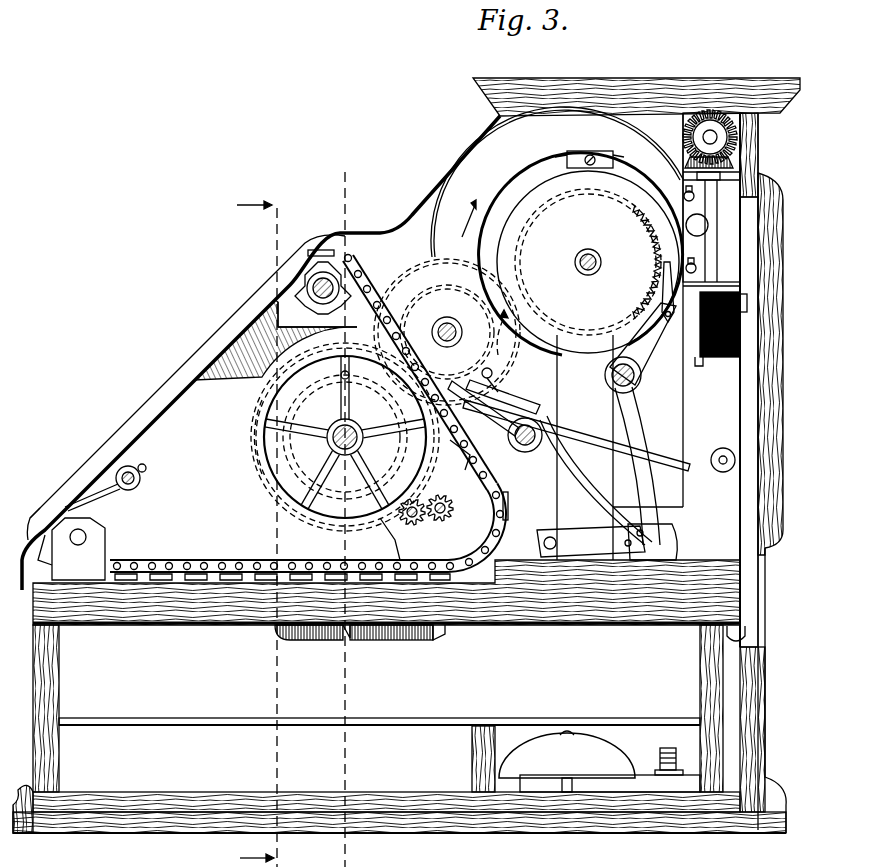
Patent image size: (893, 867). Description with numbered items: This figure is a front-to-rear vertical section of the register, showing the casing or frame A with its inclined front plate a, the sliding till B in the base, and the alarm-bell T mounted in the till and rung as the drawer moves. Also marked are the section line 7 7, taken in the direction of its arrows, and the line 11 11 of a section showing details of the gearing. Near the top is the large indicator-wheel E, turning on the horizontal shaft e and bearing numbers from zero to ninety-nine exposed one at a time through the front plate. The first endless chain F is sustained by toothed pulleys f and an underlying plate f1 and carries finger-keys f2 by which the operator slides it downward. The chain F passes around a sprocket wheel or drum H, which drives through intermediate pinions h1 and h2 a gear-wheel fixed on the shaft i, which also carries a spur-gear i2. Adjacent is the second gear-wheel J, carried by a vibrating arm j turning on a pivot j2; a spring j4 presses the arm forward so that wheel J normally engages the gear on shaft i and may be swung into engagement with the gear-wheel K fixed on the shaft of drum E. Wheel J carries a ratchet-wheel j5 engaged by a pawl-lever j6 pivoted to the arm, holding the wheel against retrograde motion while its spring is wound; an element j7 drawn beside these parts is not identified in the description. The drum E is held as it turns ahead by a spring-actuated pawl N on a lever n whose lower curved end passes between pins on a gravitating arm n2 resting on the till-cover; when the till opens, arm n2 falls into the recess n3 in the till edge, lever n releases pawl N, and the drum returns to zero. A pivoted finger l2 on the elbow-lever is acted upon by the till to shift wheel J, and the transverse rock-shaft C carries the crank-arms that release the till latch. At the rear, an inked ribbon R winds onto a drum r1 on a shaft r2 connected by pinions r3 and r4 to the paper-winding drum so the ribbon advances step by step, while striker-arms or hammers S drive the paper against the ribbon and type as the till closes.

The section line 7 7 is at (259, 525).
The section line 11 11 is at (346, 508).
The external casing or frame A is at (748, 641).
The till or tray B is at (399, 729).
The alarm-bell T is at (603, 750).
The gear-wheel K is at (588, 262).
The horizontal shaft e is at (578, 262).
The indicator-wheel E is at (557, 231).
The spring-actuated pawl N is at (662, 292).
The lever n is at (638, 372).
The gravitating arm n2 is at (660, 532).
The second drum r1 is at (710, 414).
The inked ribbon R is at (742, 336).
The striker-arms or hammers S is at (745, 381).
The shaft r2 is at (708, 243).
The pinion r4 is at (735, 135).
The pinion r3 is at (732, 162).
The ratchet-wheel j5 is at (447, 332).
The second gear-wheel J is at (472, 325).
The vibrating arm j is at (462, 418).
The pivot j2 is at (530, 448).
The pawl-lever j6 is at (572, 426).
The spring j4 is at (566, 455).
The link bar j7 is at (608, 465).
The shaft i is at (345, 437).
The spur-gear i2 is at (262, 440).
The underlying plate f1 is at (185, 388).
The inclined front wall or plate a is at (261, 353).
The toothed pulley f is at (330, 290).
The endless chain F is at (308, 418).
The finger-keys or projections f2 is at (506, 512).
The intermediate pinion h1 is at (448, 502).
The intermediate pinion h2 is at (410, 522).
The sprocket wheel or drum H is at (425, 500).
The transverse rock-shaft C is at (109, 487).
The pivoted finger l2 is at (350, 637).
The recess n3 is at (433, 632).